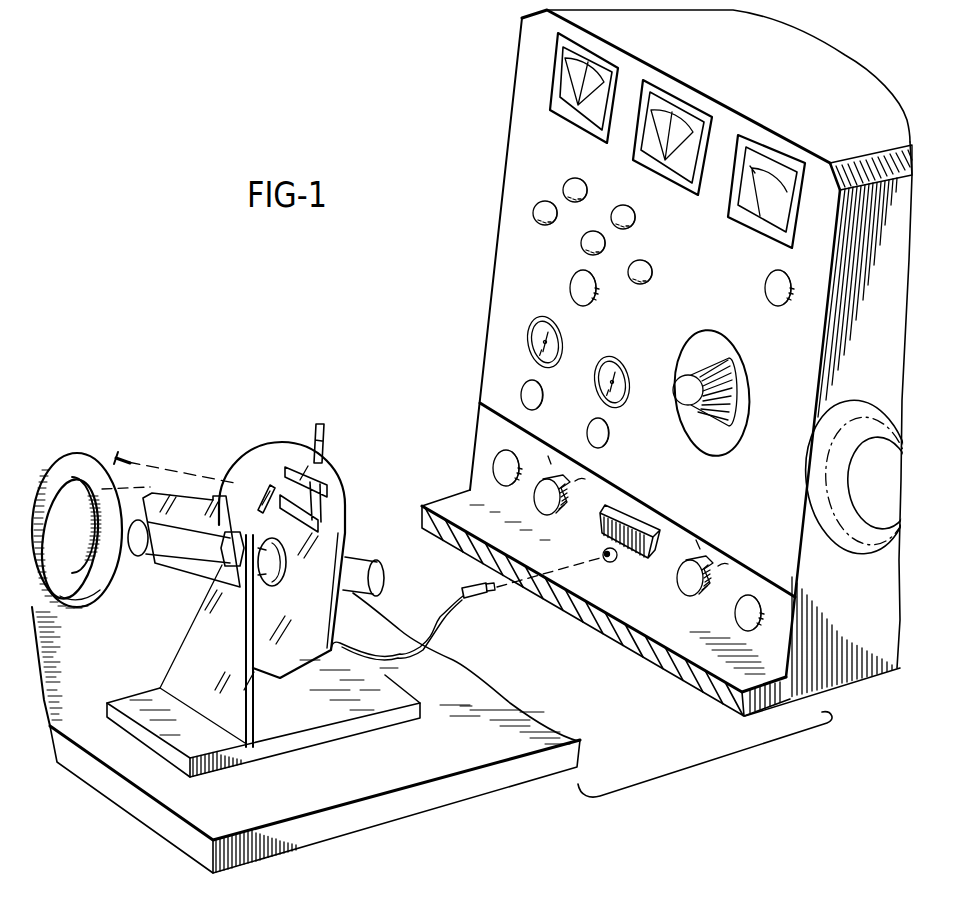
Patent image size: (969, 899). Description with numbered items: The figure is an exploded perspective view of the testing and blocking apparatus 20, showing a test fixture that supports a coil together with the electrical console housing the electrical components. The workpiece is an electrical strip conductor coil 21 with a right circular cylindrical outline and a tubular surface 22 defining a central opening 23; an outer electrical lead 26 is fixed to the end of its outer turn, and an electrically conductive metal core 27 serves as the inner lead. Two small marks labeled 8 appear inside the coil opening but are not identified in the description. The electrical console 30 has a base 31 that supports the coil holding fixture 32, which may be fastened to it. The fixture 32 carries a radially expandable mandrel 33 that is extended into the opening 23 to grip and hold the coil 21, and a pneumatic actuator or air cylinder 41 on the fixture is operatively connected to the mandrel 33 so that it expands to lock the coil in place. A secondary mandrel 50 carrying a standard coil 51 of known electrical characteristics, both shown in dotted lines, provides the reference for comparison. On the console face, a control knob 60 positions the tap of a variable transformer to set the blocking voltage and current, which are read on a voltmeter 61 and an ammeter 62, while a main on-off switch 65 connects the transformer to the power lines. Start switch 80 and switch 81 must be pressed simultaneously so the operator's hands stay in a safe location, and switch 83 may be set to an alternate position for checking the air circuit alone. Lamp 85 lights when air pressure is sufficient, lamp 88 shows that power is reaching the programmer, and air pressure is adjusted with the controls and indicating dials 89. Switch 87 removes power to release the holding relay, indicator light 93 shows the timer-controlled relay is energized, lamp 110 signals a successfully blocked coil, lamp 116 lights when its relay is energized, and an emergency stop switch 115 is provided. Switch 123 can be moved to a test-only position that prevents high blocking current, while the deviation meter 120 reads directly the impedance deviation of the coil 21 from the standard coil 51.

The apparatus 20 is at (391, 170).
The electrical strip conductor coil 21 is at (86, 440).
The tubular surface 22 is at (55, 497).
The central opening 23 is at (102, 588).
The outer electrical lead 26 is at (125, 455).
The electrically conductive metal core 27 is at (61, 570).
The winding 8 is at (98, 466).
The electrical console 30 is at (470, 245).
The base 31 is at (722, 658).
The coil holding fixture 32 is at (239, 422).
The radially expandable mandrel 33 is at (183, 480).
The pneumatic actuator 41 is at (359, 568).
The secondary mandrel 50 is at (873, 515).
The standard coil 51 is at (867, 412).
The control knob 60 is at (705, 452).
The voltmeter 61 is at (760, 160).
The ammeter 62 is at (683, 120).
The main on-off switch 65 is at (633, 556).
The switch 80 is at (493, 468).
The manually actuated switch 81 is at (742, 614).
The switch 83 is at (548, 500).
The lamp 85 is at (614, 212).
The switch 87 is at (570, 290).
The lamp 88 is at (565, 183).
The adjustable controls and indicating dials 89 is at (506, 357).
The indicator light 93 is at (536, 212).
The lamp 110 is at (638, 282).
The emergency stop switch 115 is at (764, 287).
The lamp 116 is at (582, 246).
The deviation meter 120 is at (590, 65).
The switch 123 is at (688, 584).